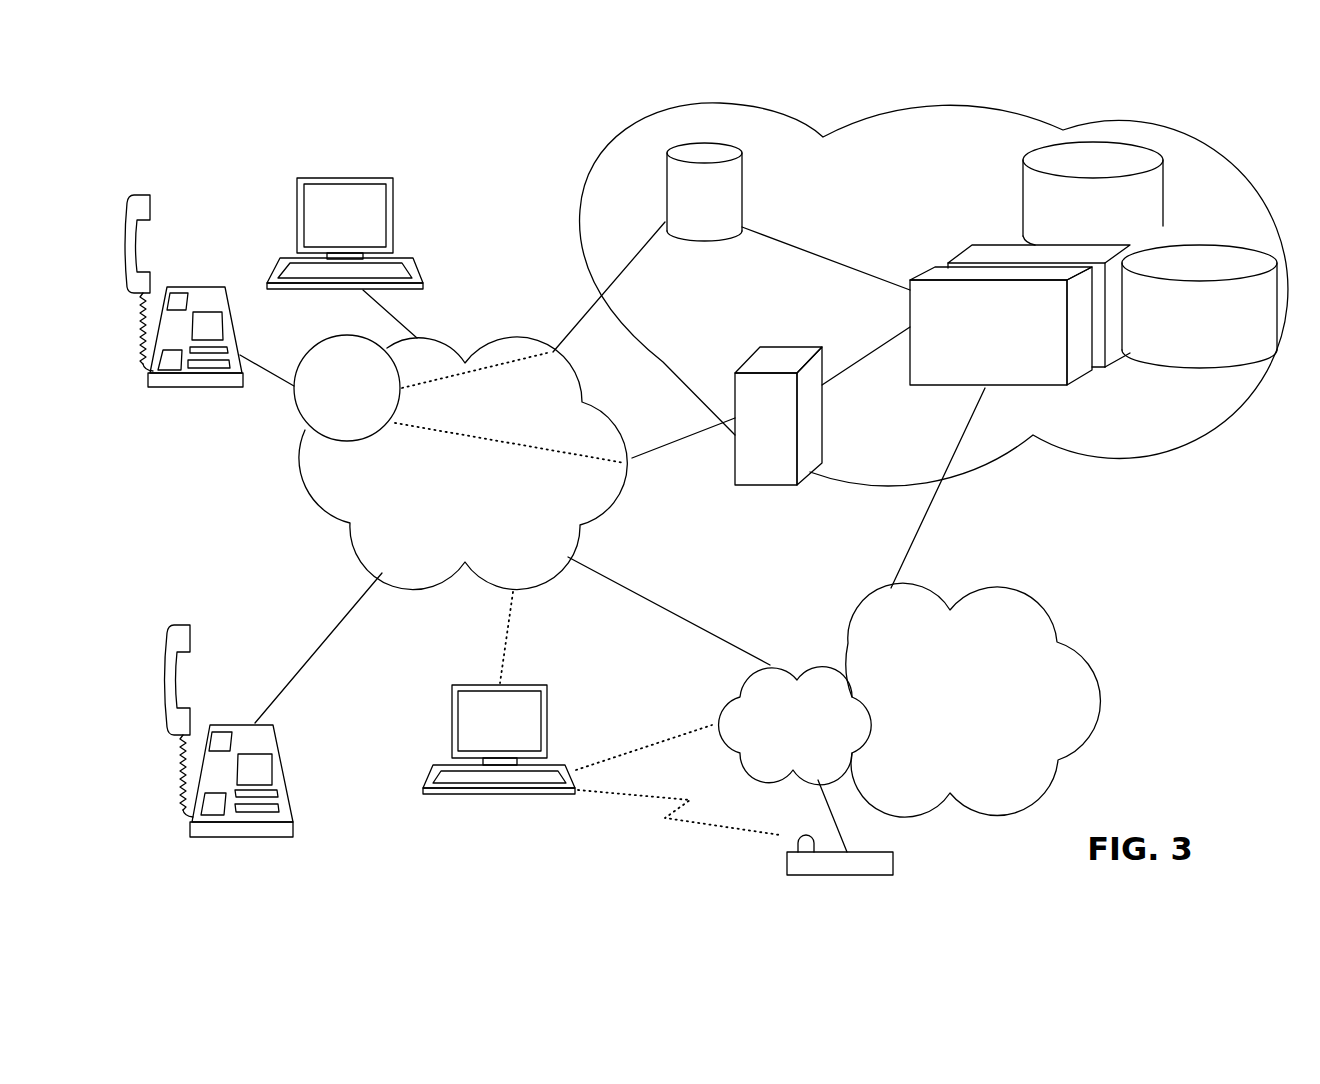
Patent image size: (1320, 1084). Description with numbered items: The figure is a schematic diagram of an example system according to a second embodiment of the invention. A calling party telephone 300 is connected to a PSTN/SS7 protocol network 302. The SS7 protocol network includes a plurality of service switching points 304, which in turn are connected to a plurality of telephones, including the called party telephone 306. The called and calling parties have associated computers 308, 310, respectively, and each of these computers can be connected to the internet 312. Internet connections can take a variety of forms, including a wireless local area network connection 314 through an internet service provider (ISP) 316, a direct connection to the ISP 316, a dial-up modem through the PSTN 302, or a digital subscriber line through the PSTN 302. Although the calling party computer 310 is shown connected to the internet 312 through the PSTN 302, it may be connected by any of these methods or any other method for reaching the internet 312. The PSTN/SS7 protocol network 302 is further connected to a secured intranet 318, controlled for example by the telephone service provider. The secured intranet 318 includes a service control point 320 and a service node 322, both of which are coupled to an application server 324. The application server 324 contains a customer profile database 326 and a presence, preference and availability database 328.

The calling party telephone 300 is at (192, 288).
The PSTN/SS7 protocol network 302 is at (303, 494).
The service switching point 304 is at (347, 336).
The called party telephone 306 is at (285, 783).
The called party computer 308 is at (547, 755).
The calling party computer 310 is at (393, 233).
The internet 312 is at (1100, 703).
The wireless local area network connection 314 is at (893, 868).
The internet service provider 316 is at (736, 700).
The secured intranet 318 is at (1087, 452).
The service control point 320 is at (743, 205).
The service node 322 is at (823, 443).
The application server 324 is at (1015, 387).
The customer profile database 326 is at (1163, 223).
The presence, preference and availability database 328 is at (1232, 365).